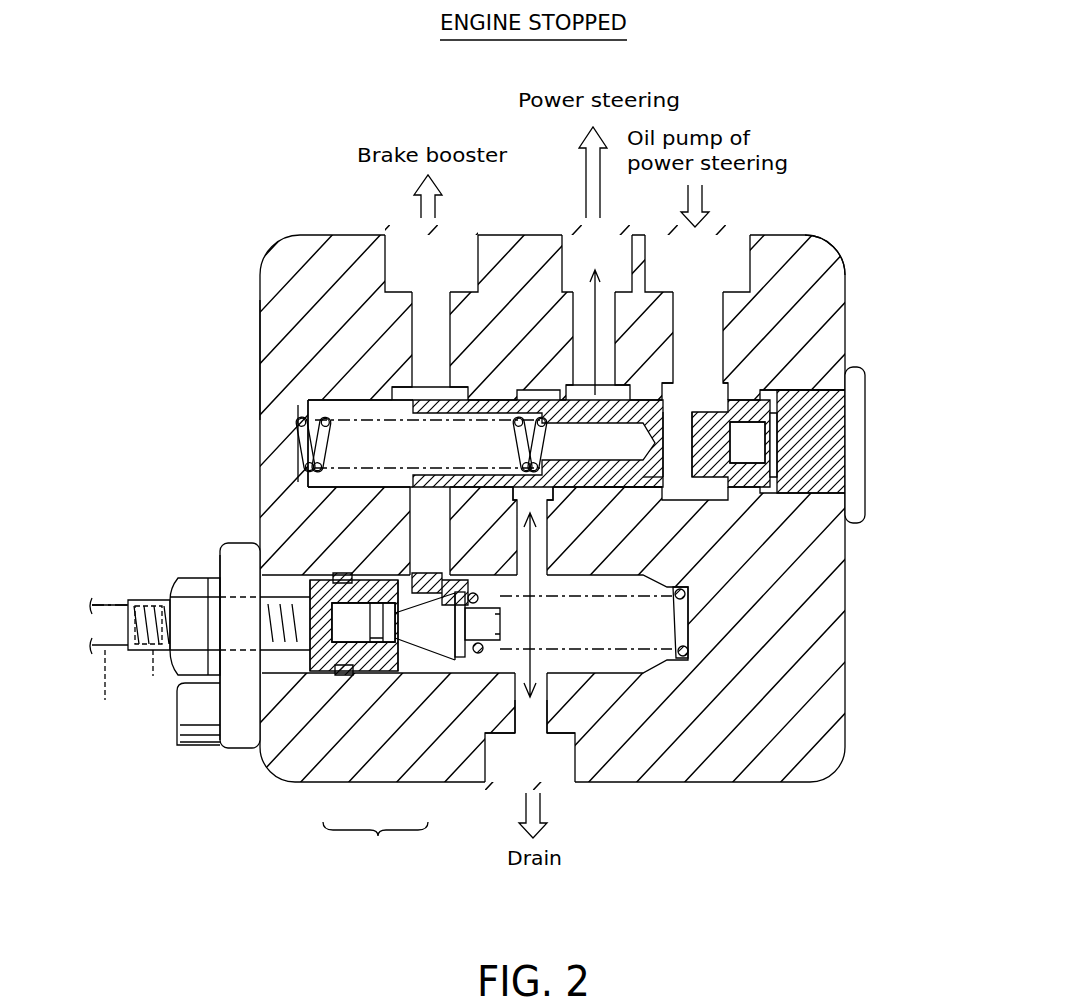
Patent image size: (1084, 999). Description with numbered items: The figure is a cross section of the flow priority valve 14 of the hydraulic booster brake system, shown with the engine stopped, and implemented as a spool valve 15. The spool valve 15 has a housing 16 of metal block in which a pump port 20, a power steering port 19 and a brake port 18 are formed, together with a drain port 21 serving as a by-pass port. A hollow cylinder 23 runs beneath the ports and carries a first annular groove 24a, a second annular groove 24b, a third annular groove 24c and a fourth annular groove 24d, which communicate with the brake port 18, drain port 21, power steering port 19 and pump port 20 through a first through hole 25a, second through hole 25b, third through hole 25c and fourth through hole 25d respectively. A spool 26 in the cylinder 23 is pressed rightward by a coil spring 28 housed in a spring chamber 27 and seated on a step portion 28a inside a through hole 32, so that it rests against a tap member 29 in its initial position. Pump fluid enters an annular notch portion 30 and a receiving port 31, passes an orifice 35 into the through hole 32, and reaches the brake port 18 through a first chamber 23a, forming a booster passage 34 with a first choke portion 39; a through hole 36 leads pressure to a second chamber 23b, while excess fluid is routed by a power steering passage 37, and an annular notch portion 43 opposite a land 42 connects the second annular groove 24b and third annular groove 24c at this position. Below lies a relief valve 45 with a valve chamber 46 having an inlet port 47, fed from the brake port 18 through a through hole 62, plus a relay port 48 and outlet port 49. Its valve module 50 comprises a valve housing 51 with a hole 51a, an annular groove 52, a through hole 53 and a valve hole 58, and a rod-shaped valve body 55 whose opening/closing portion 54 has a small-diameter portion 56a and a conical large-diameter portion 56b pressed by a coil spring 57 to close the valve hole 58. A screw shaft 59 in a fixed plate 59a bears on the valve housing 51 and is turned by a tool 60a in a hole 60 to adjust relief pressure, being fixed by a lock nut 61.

The flow priority valve 14 is at (822, 232).
The spool valve 15 is at (252, 320).
The housing 16 is at (846, 630).
The brake port 18 is at (400, 240).
The power steering port 19 is at (577, 240).
The pump port 20 is at (722, 240).
The drain port 21 is at (565, 785).
The hollow cylinder 23 is at (750, 495).
The first chamber 23a is at (390, 400).
The second chamber 23b is at (840, 390).
The first annular groove 24a is at (420, 392).
The second annular groove 24b is at (540, 390).
The third annular groove 24c is at (625, 388).
The fourth annular groove 24d is at (730, 388).
The first through hole 25a is at (425, 320).
The second through hole 25b is at (560, 715).
The third through hole 25c is at (575, 320).
The fourth through hole 25d is at (735, 320).
The spool 26 is at (455, 475).
The spring chamber 27 is at (305, 482).
The coil spring 28 is at (298, 445).
The step portion 28a is at (545, 440).
The tap member 29 is at (842, 470).
The annular notch portion 30 is at (695, 500).
The receiving port 31 is at (675, 410).
The through hole 32 is at (650, 495).
The booster passage 34 is at (400, 443).
The orifice 35 is at (720, 445).
The through hole 36 is at (780, 430).
The power steering passage 37 is at (615, 495).
The first choke portion 39 is at (440, 386).
The land 42 is at (555, 500).
The annular notch portion 43 is at (590, 478).
The relief valve 45 is at (260, 748).
The valve chamber 46 is at (363, 575).
The inlet port 47 is at (515, 560).
The relay port 48 is at (560, 580).
The outlet port 49 is at (549, 690).
The valve module 50 is at (375, 845).
The valve housing 51 is at (340, 782).
The hole 51a is at (330, 580).
The annular groove 52 is at (355, 668).
The through hole 53 is at (396, 603).
The opening/closing portion 54 is at (425, 652).
The valve body 55 is at (415, 782).
The small-diameter portion 56a is at (333, 676).
The large-diameter portion 56b is at (505, 623).
The coil spring 57 is at (688, 595).
The valve hole 58 is at (462, 660).
The screw shaft 59 is at (153, 600).
The fixed plate 59a is at (252, 552).
The hole 60 is at (152, 675).
The tool 60a is at (105, 660).
The lock nut 61 is at (228, 580).
The through hole 62 is at (440, 520).